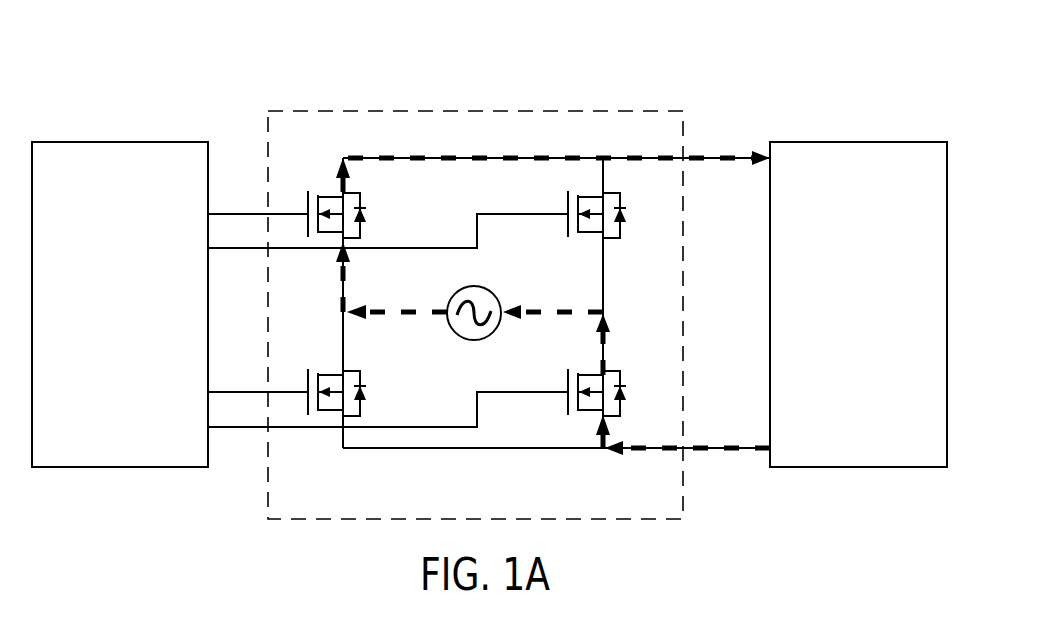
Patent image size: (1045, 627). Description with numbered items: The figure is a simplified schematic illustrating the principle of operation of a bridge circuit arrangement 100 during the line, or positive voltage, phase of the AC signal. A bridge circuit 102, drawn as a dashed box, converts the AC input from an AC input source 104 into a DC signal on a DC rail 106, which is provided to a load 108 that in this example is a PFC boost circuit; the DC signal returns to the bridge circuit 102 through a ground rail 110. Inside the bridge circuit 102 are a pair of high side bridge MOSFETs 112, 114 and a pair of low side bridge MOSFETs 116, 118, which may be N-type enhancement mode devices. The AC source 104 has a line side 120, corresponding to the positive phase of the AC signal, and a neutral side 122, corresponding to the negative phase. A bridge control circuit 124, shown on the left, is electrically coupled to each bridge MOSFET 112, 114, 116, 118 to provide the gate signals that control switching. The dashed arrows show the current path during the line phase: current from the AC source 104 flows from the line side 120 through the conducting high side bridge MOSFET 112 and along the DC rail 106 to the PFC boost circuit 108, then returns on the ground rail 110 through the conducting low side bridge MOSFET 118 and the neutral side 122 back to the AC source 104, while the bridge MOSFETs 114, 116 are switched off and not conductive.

The bridge circuit arrangement 100 is at (730, 72).
The bridge circuit 102 is at (410, 110).
The AC input source 104 is at (486, 289).
The DC rail 106 is at (505, 158).
The PFC boost circuit 108 is at (850, 142).
The ground rail 110 is at (551, 450).
The high side bridge MOSFET 112 is at (352, 188).
The high side bridge MOSFET 114 is at (566, 197).
The low side bridge MOSFET 116 is at (334, 370).
The low side bridge MOSFET 118 is at (578, 410).
The line side 120 is at (396, 318).
The neutral side 122 is at (538, 318).
The bridge control circuit 124 is at (101, 142).